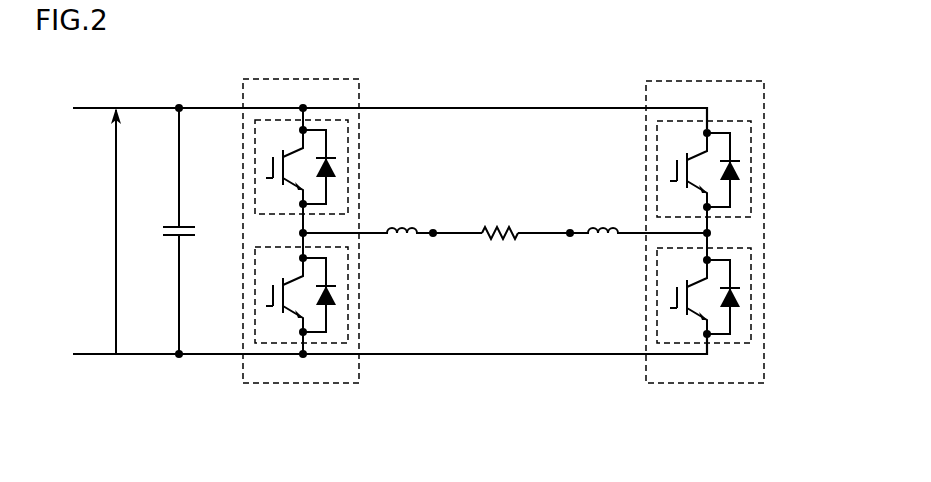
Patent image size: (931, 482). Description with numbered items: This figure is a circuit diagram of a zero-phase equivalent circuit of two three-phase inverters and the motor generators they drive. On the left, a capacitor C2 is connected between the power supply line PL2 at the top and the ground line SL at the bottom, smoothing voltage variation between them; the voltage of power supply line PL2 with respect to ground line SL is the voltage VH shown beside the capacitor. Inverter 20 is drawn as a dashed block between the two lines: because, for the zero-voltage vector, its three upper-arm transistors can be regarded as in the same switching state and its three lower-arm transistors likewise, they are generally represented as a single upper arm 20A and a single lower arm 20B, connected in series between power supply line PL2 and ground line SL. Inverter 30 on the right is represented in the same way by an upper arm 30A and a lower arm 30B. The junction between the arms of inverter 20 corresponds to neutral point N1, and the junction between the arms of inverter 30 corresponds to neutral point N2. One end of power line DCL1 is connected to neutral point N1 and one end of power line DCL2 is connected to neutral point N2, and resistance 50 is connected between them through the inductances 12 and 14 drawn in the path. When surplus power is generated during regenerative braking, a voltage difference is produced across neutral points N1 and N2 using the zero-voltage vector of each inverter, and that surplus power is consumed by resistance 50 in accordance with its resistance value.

The inverter 20 is at (309, 78).
The upper arm 20A is at (350, 130).
The lower arm 20B is at (350, 317).
The inverter 30 is at (710, 80).
The upper arm 30A is at (753, 172).
The lower arm 30B is at (753, 297).
The reactor 12 is at (400, 218).
The reactor 14 is at (604, 218).
The resistance 50 is at (503, 228).
The capacitor C2 is at (185, 222).
The neutral point N1 is at (433, 237).
The neutral point N2 is at (570, 237).
The power line DCL1 is at (465, 237).
The power line DCL2 is at (542, 237).
The power supply line PL2 is at (503, 106).
The ground line SL is at (497, 357).
The voltage VH is at (100, 231).